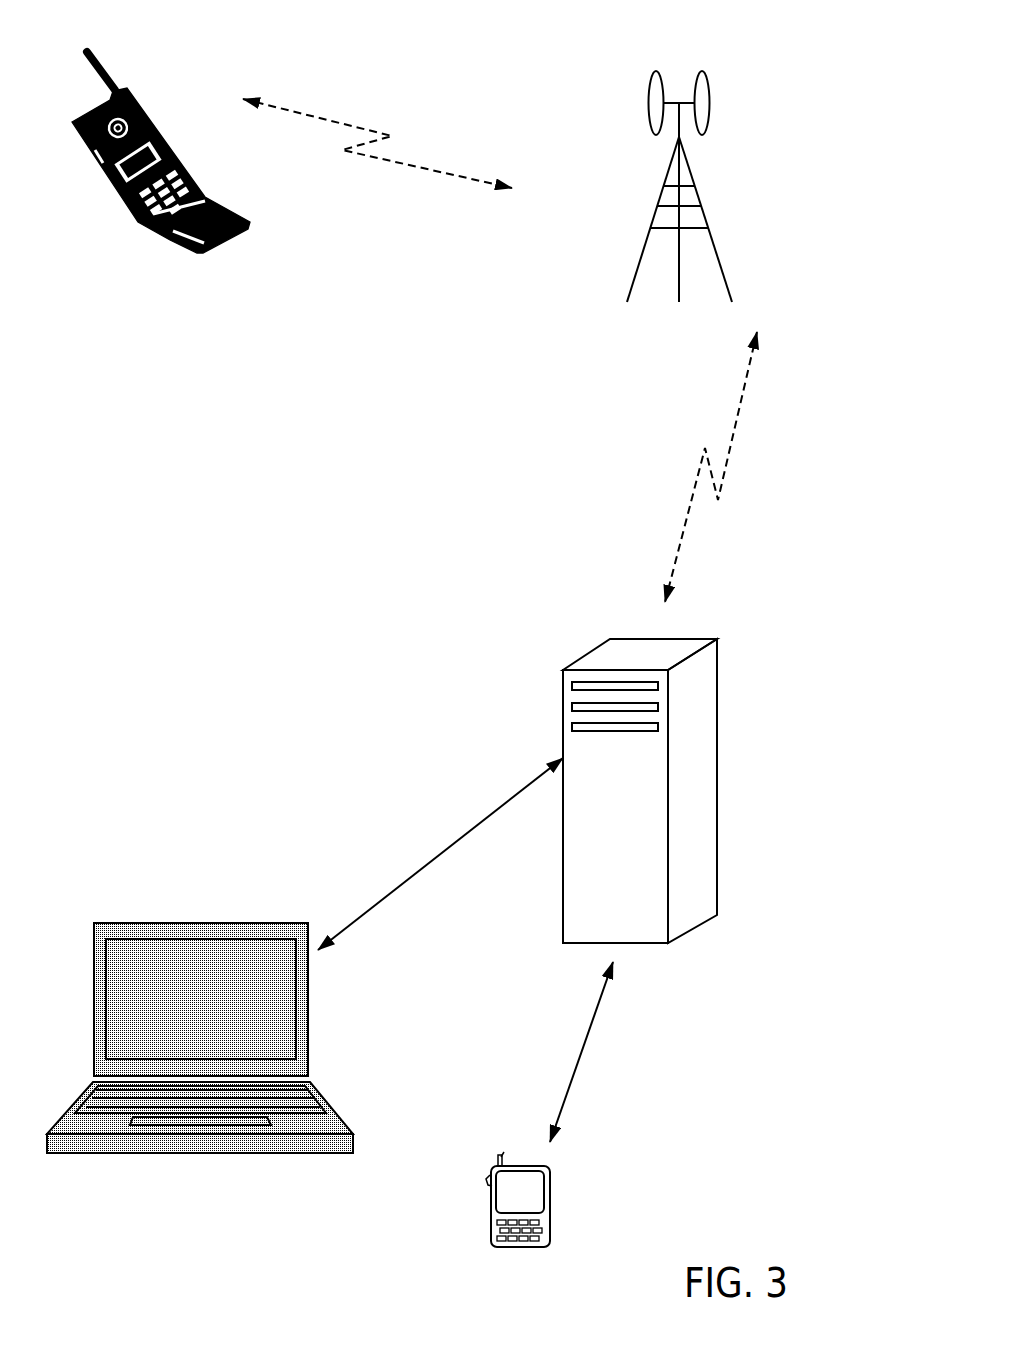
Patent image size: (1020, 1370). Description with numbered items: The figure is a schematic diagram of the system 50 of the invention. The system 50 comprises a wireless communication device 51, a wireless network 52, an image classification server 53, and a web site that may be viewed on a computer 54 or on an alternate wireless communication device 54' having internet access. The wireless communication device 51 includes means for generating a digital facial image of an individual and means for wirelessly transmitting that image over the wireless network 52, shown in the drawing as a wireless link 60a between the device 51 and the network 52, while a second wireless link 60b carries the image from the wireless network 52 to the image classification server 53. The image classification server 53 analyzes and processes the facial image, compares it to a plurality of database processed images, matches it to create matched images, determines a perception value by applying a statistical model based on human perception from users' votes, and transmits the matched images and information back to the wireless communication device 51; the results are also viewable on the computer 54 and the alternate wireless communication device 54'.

The system 50 is at (370, 407).
The wireless communication device 51 is at (213, 252).
The wireless network 52 is at (692, 148).
The image classification server 53 is at (718, 717).
The computer 54 is at (200, 968).
The alternate wireless communication device 54' is at (585, 1170).
The wireless link between mobile phone and base station 60a is at (434, 163).
The wireless link between base station and server 60b is at (732, 446).